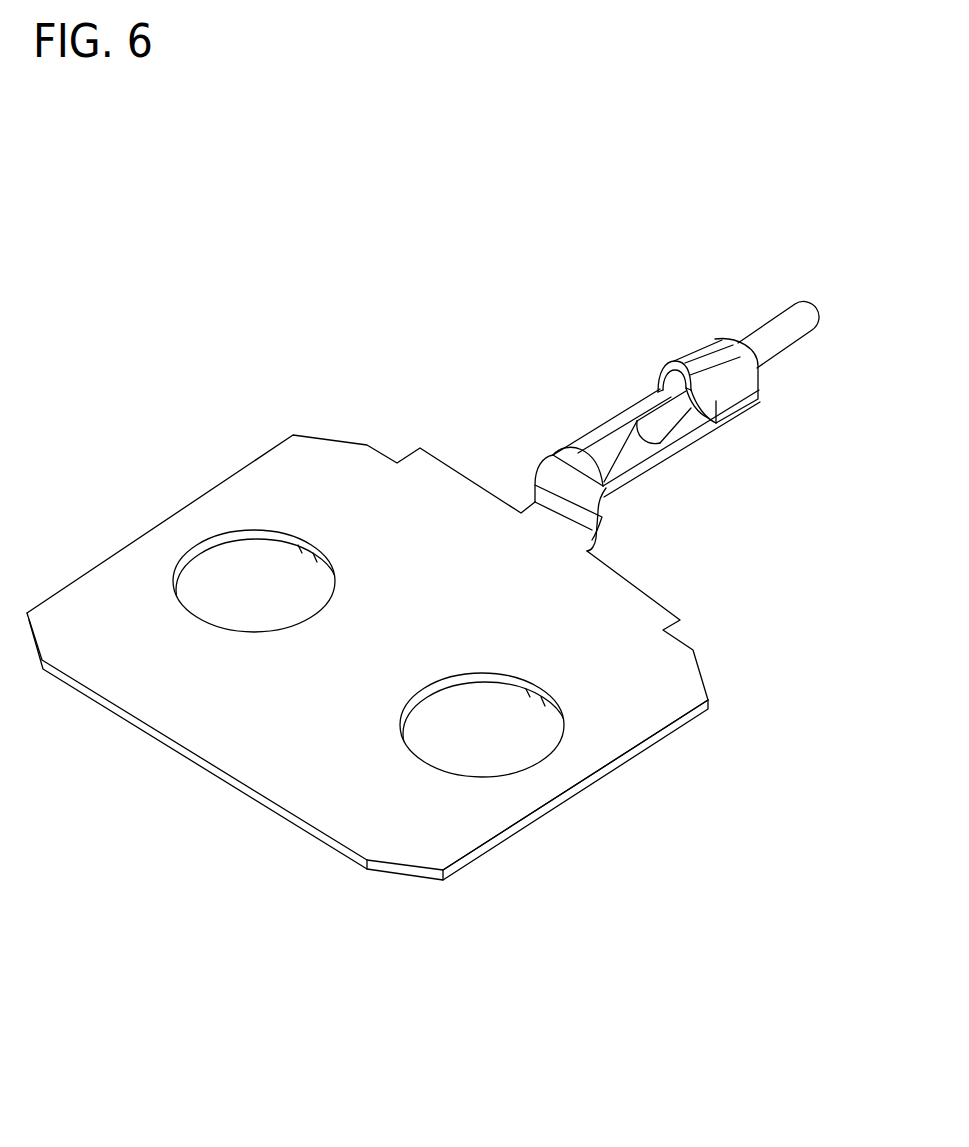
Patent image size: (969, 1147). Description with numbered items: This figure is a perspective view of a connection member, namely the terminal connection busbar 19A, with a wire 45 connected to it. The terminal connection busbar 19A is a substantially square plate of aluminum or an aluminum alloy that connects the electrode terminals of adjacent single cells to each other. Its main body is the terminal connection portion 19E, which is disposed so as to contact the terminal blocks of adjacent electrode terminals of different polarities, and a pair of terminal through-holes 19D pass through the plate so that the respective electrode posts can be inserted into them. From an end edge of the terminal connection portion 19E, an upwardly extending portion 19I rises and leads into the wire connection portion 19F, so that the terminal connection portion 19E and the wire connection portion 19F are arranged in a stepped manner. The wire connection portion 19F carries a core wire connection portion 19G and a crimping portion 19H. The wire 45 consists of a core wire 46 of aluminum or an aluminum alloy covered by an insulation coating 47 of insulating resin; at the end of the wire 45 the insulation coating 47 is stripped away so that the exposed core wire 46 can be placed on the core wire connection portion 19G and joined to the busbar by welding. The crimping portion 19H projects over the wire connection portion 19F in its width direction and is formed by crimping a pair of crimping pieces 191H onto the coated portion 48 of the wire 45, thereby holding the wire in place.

The terminal connection busbar 19A is at (453, 467).
The terminal through-holes 19D is at (253, 542).
The terminal connection portion 19E is at (435, 837).
The wire connection portion 19F is at (646, 399).
The core wire connection portion 19G is at (592, 442).
The crimping portion 19H is at (671, 324).
The crimping pieces 191H is at (733, 356).
The upwardly extending portion 19I is at (598, 527).
The wire 45 is at (730, 385).
The core wire 46 is at (636, 444).
The insulation coating 47 is at (785, 351).
The coated portion 48 is at (712, 415).